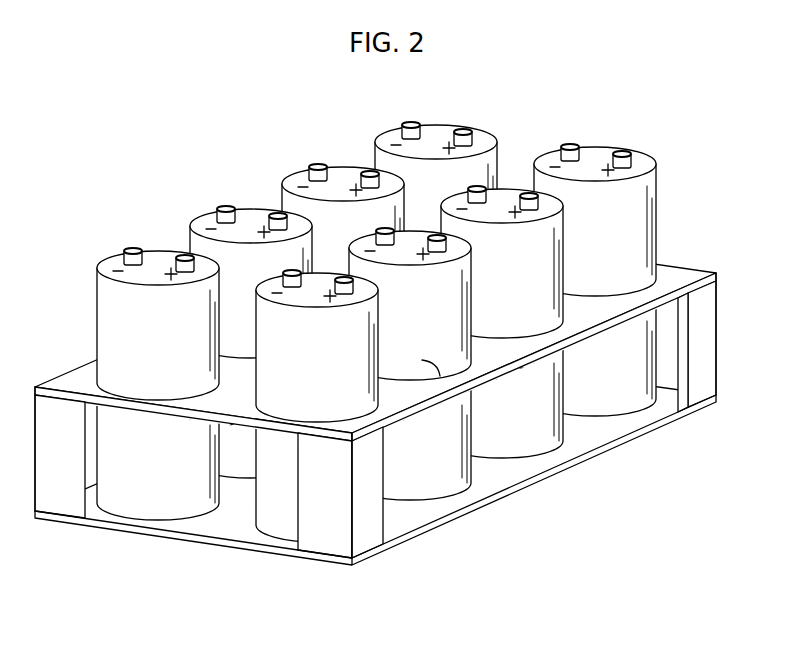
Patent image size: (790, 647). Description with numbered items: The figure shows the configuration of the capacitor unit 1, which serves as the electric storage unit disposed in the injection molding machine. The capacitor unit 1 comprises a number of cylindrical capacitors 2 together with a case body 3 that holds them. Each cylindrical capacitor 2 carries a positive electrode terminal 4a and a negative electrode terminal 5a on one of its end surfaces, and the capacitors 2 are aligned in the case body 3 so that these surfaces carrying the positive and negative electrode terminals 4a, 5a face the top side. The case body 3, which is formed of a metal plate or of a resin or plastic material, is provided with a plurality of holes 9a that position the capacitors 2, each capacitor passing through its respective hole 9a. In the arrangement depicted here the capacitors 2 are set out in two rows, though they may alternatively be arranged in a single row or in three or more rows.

The capacitor unit 1 is at (375, 372).
The cylindrical capacitor 2 is at (132, 495).
The case body 3 is at (365, 535).
The positive electrode terminal 4a is at (181, 256).
The negative electrode terminal 5a is at (126, 249).
The hole 9a is at (422, 360).